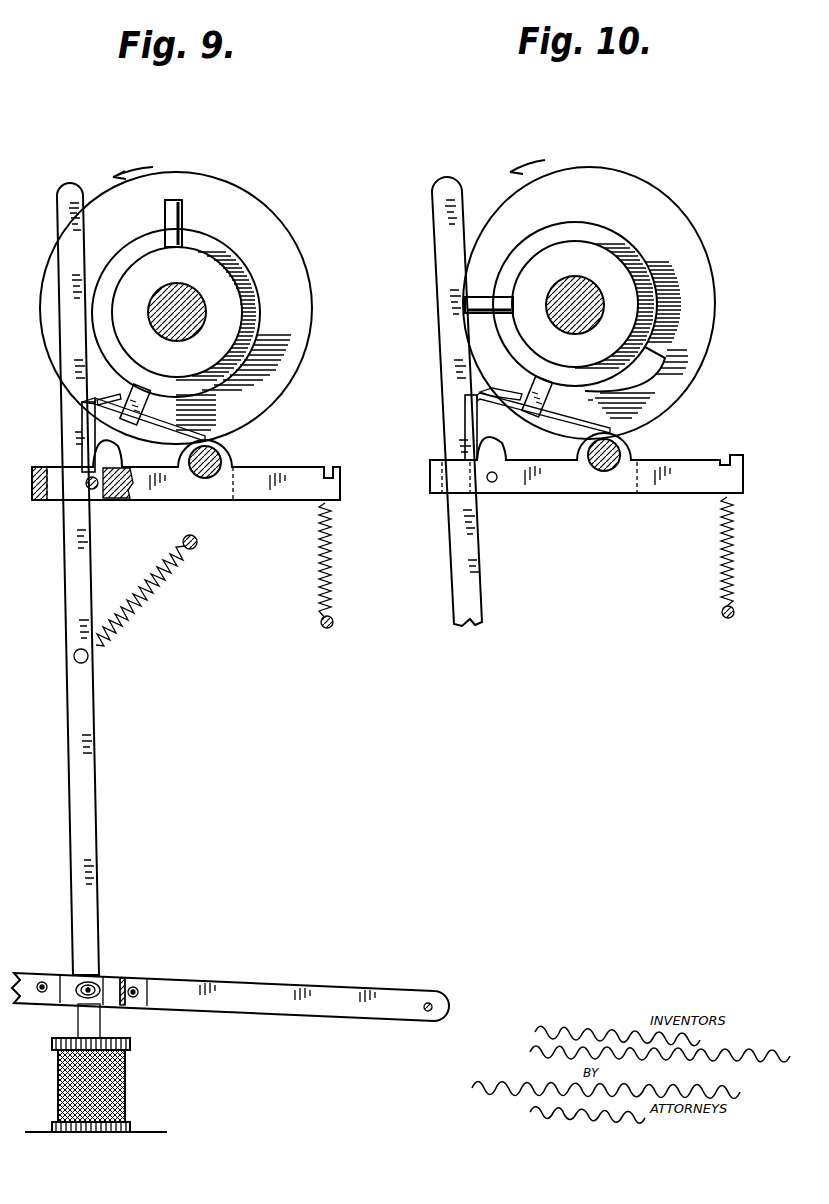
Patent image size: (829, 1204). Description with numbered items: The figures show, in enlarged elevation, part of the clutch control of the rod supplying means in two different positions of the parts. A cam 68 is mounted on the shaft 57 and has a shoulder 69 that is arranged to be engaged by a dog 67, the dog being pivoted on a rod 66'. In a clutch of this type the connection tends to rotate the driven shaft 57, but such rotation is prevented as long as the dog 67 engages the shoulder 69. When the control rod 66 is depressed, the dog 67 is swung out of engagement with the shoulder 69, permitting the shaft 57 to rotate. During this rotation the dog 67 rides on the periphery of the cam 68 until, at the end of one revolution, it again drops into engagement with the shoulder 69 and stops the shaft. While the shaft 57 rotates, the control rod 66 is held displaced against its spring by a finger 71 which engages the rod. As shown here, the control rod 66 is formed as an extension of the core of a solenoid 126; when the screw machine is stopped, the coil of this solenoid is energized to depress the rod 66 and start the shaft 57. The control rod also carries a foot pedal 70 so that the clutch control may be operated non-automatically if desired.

In FIG. 9, the shaft 57 is at (207, 303).
In FIG. 10, the shaft 57 is at (605, 295).
In FIG. 9, the control rod 66 is at (58, 576).
In FIG. 10, the control rod 66 is at (493, 401).
In FIG. 9, the rod 66' is at (187, 487).
In FIG. 10, the rod 66' is at (607, 488).
In FIG. 9, the dog 67 is at (283, 497).
In FIG. 10, the dog 67 is at (570, 493).
In FIG. 9, the cam 68 is at (257, 268).
In FIG. 10, the cam 68 is at (642, 250).
In FIG. 9, the shoulder 69 is at (100, 383).
In FIG. 10, the shoulder 69 is at (668, 352).
In FIG. 9, the foot pedal 70 is at (217, 985).
In FIG. 9, the finger 71 is at (182, 202).
In FIG. 9, the solenoid 126 is at (127, 1088).